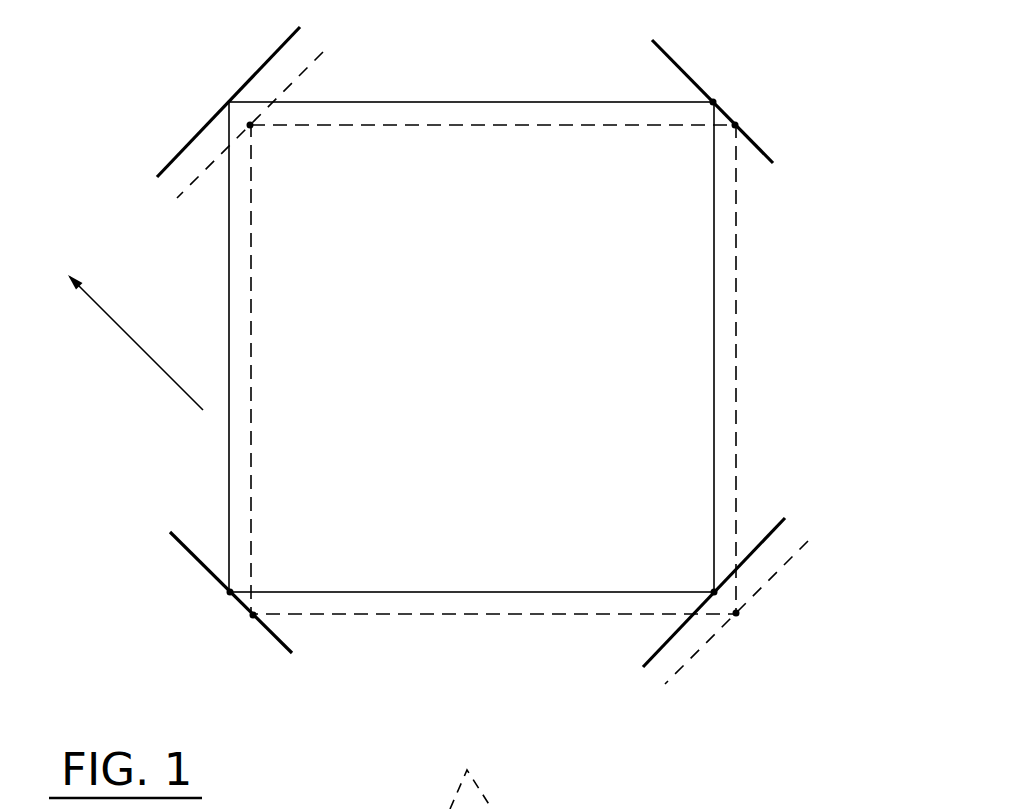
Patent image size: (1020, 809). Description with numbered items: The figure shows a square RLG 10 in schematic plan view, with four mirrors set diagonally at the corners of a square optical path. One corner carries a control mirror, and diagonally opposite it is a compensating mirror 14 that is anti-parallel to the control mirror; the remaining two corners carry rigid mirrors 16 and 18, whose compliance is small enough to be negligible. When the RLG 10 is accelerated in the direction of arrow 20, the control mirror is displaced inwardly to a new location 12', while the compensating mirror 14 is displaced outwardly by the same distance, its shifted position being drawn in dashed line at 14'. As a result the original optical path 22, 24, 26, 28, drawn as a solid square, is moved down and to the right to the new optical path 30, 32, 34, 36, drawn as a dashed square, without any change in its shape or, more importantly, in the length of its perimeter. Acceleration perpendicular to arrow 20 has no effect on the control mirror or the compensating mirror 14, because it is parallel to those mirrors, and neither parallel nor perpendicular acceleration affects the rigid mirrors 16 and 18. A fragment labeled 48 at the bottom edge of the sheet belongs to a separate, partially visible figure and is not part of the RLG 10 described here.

The square RLG 10 is at (808, 98).
The new location of control mirror 12' is at (276, 123).
The compensating mirror 14 is at (747, 567).
The displaced mirror position 14' is at (736, 627).
The rigid mirror 16 is at (672, 58).
The rigid mirror 18 is at (187, 552).
The arrow 20 is at (140, 350).
The original optical path 22 is at (229, 102).
The original optical path 24 is at (714, 101).
The original optical path 26 is at (714, 592).
The original optical path 28 is at (230, 592).
The new optical path 30 is at (252, 126).
The new optical path 32 is at (737, 124).
The new optical path 34 is at (740, 612).
The new optical path 36 is at (253, 616).
The element of adjacent figure 48 is at (575, 808).